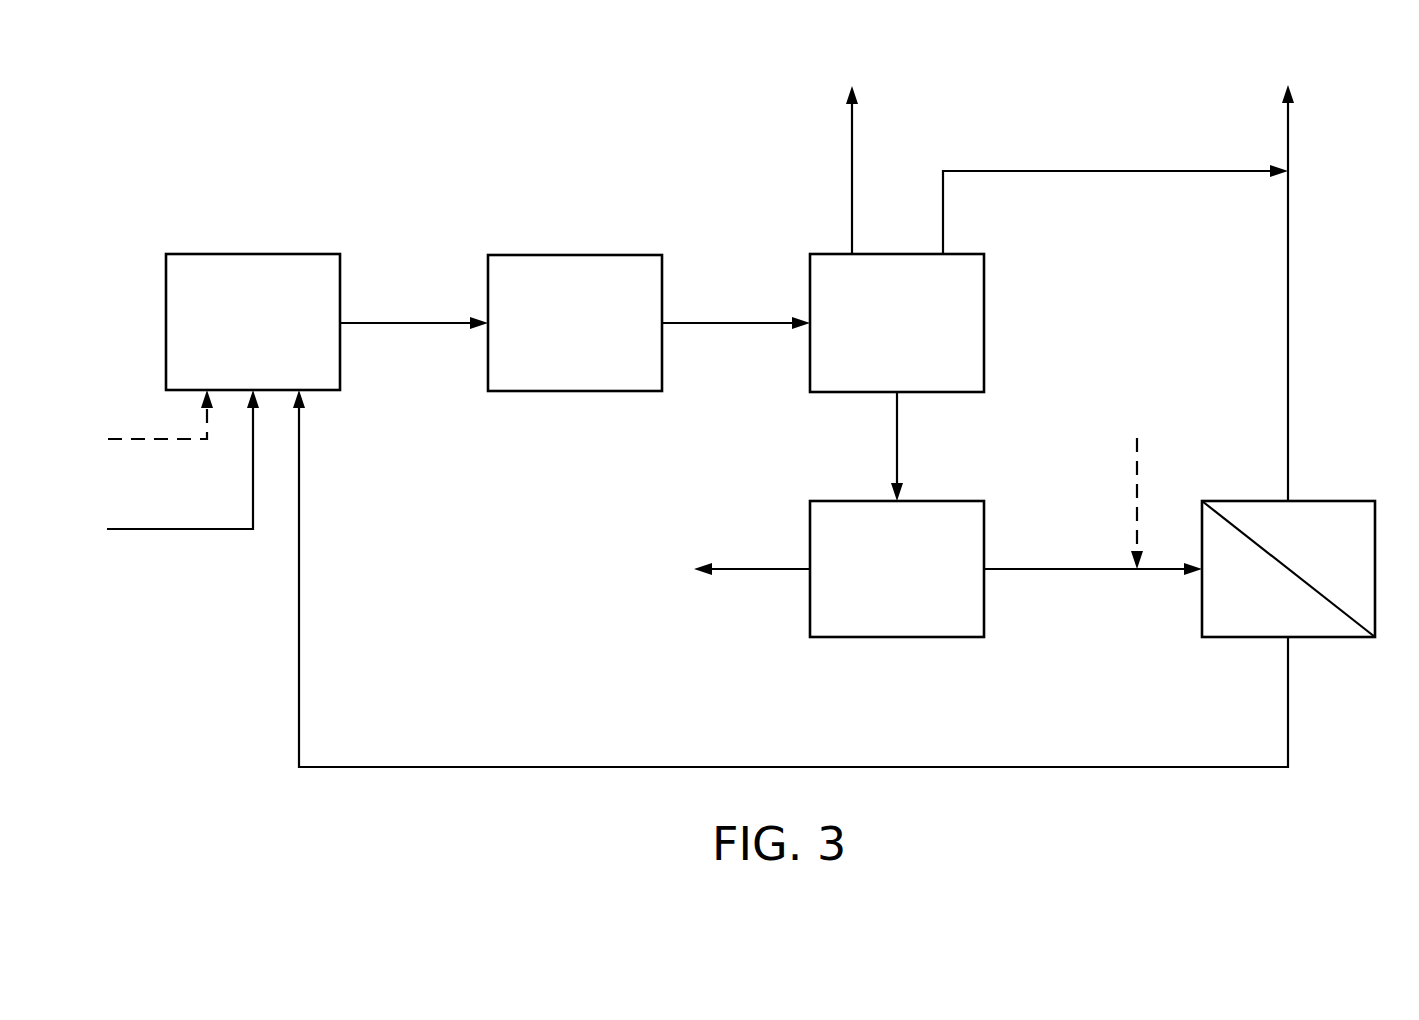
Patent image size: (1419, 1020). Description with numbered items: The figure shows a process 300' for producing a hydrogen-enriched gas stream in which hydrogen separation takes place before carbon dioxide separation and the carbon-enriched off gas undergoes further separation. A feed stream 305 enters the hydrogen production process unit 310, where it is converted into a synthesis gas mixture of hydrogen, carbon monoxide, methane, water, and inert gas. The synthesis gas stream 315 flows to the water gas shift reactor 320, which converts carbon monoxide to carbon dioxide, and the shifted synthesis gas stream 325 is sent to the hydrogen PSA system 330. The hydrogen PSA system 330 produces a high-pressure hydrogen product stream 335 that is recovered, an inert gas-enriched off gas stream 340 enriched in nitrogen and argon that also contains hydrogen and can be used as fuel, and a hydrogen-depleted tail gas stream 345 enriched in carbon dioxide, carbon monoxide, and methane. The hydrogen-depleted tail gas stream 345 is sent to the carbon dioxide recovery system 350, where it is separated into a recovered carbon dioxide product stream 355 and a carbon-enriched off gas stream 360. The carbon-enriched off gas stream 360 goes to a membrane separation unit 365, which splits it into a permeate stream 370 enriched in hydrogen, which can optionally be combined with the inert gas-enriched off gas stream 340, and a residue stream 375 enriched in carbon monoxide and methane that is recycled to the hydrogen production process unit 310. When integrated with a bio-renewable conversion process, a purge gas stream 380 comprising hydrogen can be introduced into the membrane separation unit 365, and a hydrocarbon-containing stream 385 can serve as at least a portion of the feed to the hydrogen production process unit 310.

The process 300' is at (132, 118).
The feed stream 305 is at (180, 529).
The hydrogen production process unit 310 is at (250, 254).
The synthesis gas stream 315 is at (414, 323).
The water gas shift reactor 320 is at (573, 255).
The shifted synthesis gas stream 325 is at (737, 323).
The hydrogen PSA system 330 is at (984, 322).
The high-pressure hydrogen product stream 335 is at (852, 169).
The inert gas-enriched off gas stream 340 is at (1080, 171).
The hydrogen-depleted tail gas stream 345 is at (897, 445).
The carbon dioxide recovery system 350 is at (962, 501).
The carbon dioxide product stream 355 is at (767, 572).
The carbon-enriched off gas stream 360 is at (1072, 572).
The membrane separation unit 365 is at (1345, 501).
The permeate stream 370 is at (1288, 323).
The residue stream 375 is at (1288, 702).
The purge gas stream 380 is at (1137, 458).
The hydrocarbon-containing stream 385 is at (120, 439).